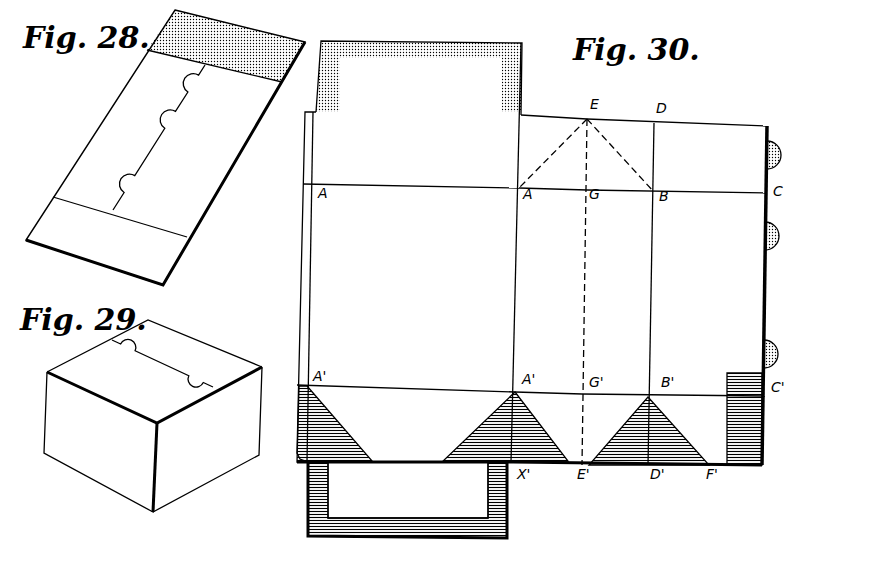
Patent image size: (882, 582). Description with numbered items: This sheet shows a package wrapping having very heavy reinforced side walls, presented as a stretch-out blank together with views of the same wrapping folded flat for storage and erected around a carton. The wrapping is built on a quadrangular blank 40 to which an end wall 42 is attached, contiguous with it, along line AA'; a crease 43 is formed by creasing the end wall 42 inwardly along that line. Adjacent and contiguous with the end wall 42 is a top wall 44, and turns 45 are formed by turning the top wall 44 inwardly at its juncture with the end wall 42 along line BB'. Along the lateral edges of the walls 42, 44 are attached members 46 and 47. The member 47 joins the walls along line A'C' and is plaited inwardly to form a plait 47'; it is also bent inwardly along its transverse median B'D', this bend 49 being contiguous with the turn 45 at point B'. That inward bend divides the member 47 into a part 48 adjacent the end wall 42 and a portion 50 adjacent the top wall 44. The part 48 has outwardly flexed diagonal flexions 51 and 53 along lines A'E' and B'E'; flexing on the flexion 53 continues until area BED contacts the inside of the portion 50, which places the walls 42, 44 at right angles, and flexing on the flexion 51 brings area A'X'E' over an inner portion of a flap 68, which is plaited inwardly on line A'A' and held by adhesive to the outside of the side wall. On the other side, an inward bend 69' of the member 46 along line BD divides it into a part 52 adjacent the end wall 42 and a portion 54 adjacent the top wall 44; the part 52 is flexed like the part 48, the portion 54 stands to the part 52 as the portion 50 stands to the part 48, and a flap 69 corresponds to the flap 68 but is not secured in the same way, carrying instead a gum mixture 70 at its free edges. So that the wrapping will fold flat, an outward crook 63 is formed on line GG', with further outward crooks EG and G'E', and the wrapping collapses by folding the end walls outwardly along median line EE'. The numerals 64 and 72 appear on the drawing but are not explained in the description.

In FIG. 30, the quadrangular blank 40 is at (408, 287).
In FIG. 29, the end wall 42 is at (100, 442).
In FIG. 30, the end wall 42 is at (549, 252).
In FIG. 29, the crease 43 is at (75, 390).
In FIG. 30, the crease 43 is at (533, 337).
In FIG. 29, the top wall 44 is at (154, 353).
In FIG. 30, the top wall 44 is at (674, 294).
In FIG. 30, the turn 45 is at (673, 352).
In FIG. 30, the member 46 is at (700, 88).
In FIG. 30, the member 47 is at (529, 485).
In FIG. 30, the plait 47' is at (564, 377).
In FIG. 30, the part 48 is at (561, 408).
In FIG. 30, the bend 49 is at (650, 430).
In FIG. 30, the portion 50 is at (727, 419).
In FIG. 30, the flexion 51 is at (551, 436).
In FIG. 30, the part 52 is at (586, 153).
In FIG. 30, the flexion 53 is at (607, 438).
In FIG. 30, the portion 54 is at (677, 150).
In FIG. 30, the outward crook 63 is at (599, 292).
In FIG. 30, the edge 64 is at (545, 288).
In FIG. 28, the flap 68 is at (117, 243).
In FIG. 30, the flap 68 is at (402, 462).
In FIG. 28, the flap 69 is at (172, 147).
In FIG. 29, the flap 69 is at (207, 439).
In FIG. 30, the flap 69 is at (419, 81).
In FIG. 30, the inward bend 69' is at (674, 157).
In FIG. 28, the gum mixture 70 is at (296, 72).
In FIG. 30, the gum mixture 70 is at (475, 52).
In FIG. 28, the locking tab 72 is at (191, 81).
In FIG. 30, the locking tab 72 is at (781, 243).